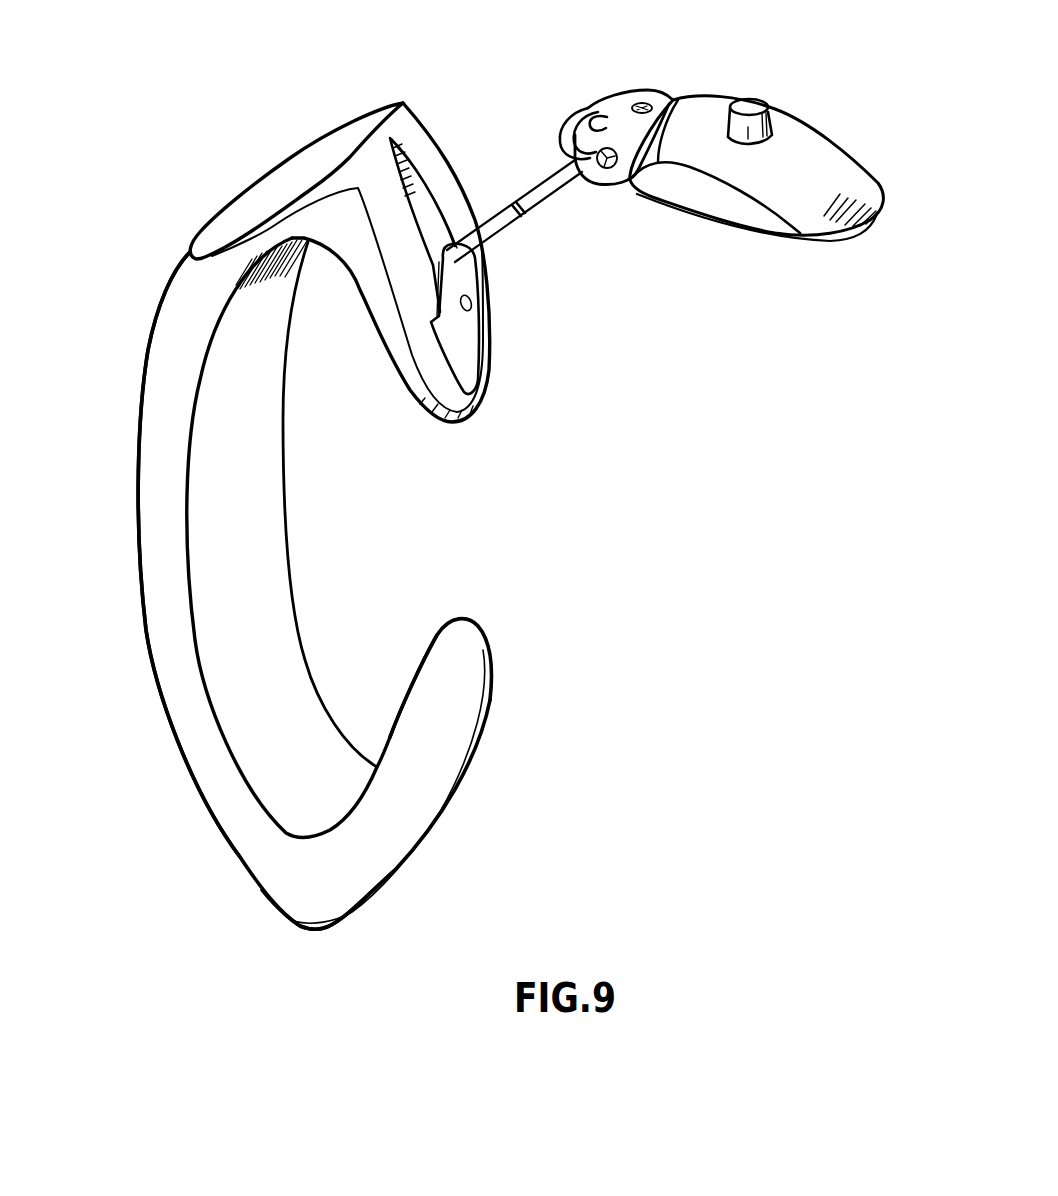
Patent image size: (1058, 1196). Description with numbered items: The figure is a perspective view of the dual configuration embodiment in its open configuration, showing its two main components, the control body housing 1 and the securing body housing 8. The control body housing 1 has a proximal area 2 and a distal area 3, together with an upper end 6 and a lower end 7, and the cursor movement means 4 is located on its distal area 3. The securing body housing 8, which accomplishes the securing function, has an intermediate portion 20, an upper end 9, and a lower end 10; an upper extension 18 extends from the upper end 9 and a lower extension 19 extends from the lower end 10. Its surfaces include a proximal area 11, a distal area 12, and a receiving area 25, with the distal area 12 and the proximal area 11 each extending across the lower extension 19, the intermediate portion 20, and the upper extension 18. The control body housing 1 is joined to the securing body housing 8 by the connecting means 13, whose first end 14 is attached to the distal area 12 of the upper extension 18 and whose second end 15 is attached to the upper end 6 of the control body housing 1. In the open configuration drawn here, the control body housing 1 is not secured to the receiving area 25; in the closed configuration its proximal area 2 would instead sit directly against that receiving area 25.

The control body housing 1 is at (800, 120).
The proximal area 2 is at (805, 240).
The distal area 3 is at (820, 156).
The cursor movement means 4 is at (746, 97).
The upper end 6 is at (690, 96).
The lower end 7 is at (880, 212).
The securing body housing 8 is at (140, 497).
The upper end 9 is at (403, 100).
The lower end 10 is at (311, 929).
The proximal area 11 is at (270, 456).
The distal area 12 is at (140, 583).
The connecting means 13 is at (533, 210).
The first end 14 is at (470, 352).
The second end 15 is at (597, 95).
The upper extension 18 is at (510, 380).
The lower extension 19 is at (492, 690).
The intermediate portion 20 is at (285, 520).
The receiving area 25 is at (263, 187).